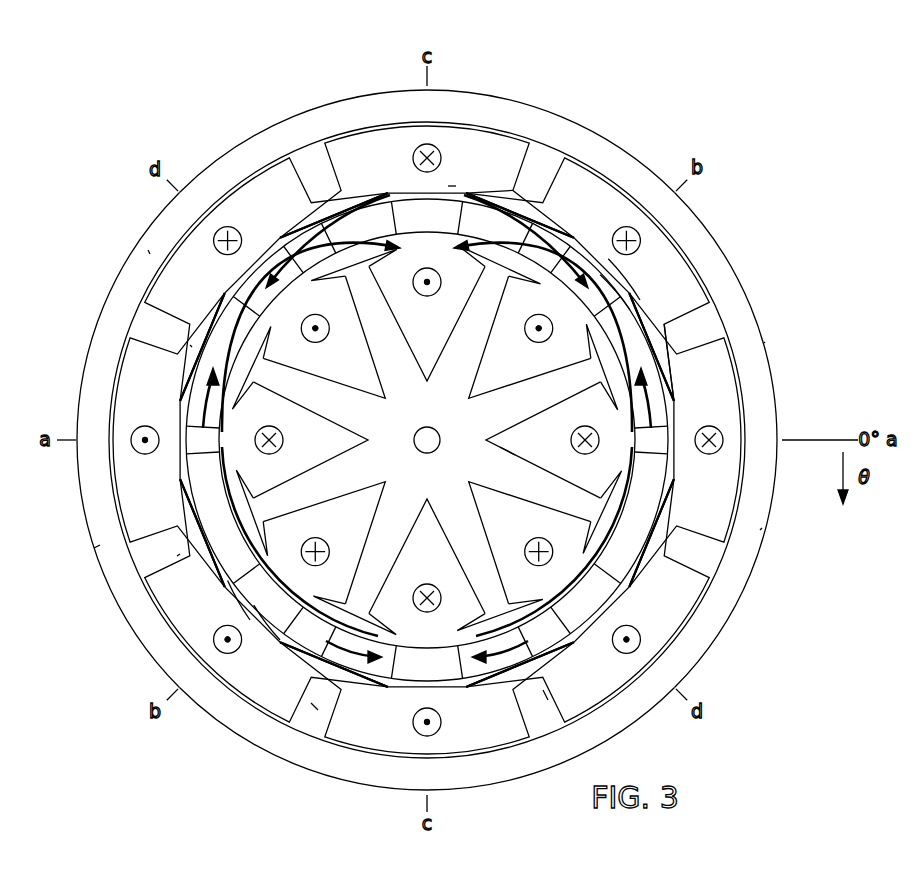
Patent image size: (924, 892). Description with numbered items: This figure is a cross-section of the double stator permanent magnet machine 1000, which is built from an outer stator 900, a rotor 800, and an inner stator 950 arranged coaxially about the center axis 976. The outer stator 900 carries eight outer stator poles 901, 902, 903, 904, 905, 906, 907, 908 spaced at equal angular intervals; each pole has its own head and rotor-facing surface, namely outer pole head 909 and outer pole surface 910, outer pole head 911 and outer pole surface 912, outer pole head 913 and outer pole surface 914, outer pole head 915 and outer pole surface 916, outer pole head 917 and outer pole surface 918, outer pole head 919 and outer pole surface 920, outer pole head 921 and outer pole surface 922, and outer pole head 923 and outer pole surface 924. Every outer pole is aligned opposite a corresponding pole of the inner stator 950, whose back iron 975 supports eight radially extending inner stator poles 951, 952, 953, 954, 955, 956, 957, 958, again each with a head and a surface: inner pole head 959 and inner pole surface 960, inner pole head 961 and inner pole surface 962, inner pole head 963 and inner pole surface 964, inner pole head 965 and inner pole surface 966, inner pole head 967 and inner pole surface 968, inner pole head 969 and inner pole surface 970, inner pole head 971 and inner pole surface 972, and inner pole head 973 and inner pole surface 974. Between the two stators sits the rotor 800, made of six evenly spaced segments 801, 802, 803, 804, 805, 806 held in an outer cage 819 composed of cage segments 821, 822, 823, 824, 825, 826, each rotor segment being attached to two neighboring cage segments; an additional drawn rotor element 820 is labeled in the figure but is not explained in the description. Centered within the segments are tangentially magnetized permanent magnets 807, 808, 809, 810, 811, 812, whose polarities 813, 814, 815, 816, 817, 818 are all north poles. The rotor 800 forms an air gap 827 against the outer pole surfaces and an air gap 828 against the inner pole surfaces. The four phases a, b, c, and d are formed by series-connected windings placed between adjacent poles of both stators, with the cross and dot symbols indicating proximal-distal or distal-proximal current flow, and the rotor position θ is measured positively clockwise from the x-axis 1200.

The outer stator 900 is at (500, 97).
The outer stator pole 901 is at (556, 135).
The outer stator pole 902 is at (705, 278).
The outer stator pole 903 is at (700, 630).
The outer stator pole 904 is at (602, 735).
The outer stator pole 905 is at (270, 730).
The outer stator pole 906 is at (152, 625).
The outer stator pole 907 is at (170, 290).
The outer stator pole 908 is at (283, 148).
The outer pole head 909 is at (552, 210).
The outer pole surface 910 is at (476, 196).
The outer pole head 911 is at (764, 342).
The outer pole surface 912 is at (690, 335).
The outer pole head 913 is at (760, 530).
The outer pole surface 914 is at (688, 565).
The outer pole head 915 is at (470, 692).
The outer pole surface 916 is at (548, 705).
The outer pole head 917 is at (275, 685).
The outer pole surface 918 is at (315, 712).
The outer pole head 919 is at (100, 545).
The outer pole surface 920 is at (178, 556).
The outer pole head 921 is at (148, 252).
The outer pole surface 922 is at (190, 345).
The outer pole head 923 is at (338, 186).
The outer pole surface 924 is at (300, 212).
The rotor 800 is at (400, 186).
The segment 801 is at (603, 186).
The segment 802 is at (592, 362).
The segment 803 is at (630, 636).
The segment 804 is at (230, 630).
The segment 805 is at (348, 475).
The segment 806 is at (262, 298).
The permanent magnet 807 is at (486, 290).
The permanent magnet 808 is at (672, 478).
The permanent magnet 809 is at (560, 655).
The permanent magnet 810 is at (270, 645).
The permanent magnet 811 is at (188, 470).
The permanent magnet 812 is at (322, 237).
The polarity 813 is at (618, 258).
The polarity 814 is at (675, 398).
The polarity 815 is at (426, 662).
The polarity 816 is at (380, 690).
The polarity 817 is at (190, 402).
The polarity 818 is at (252, 255).
The outer cage 819 is at (510, 250).
The ring segment 820 is at (445, 233).
The cage segment 821 is at (622, 288).
The cage segment 822 is at (640, 598).
The cage segment 823 is at (410, 708).
The cage segment 824 is at (215, 605).
The cage segment 825 is at (195, 366).
The cage segment 826 is at (427, 438).
The air gap 827 is at (452, 186).
The air gap 828 is at (398, 256).
The inner stator 950 is at (482, 386).
The inner stator pole 951 is at (412, 350).
The inner stator pole 952 is at (508, 447).
The inner stator pole 953 is at (505, 450).
The inner stator pole 954 is at (538, 548).
The inner stator pole 955 is at (403, 545).
The inner stator pole 956 is at (440, 505).
The inner stator pole 957 is at (348, 420).
The inner stator pole 958 is at (372, 352).
The inner pole head 959 is at (466, 252).
The inner pole surface 960 is at (538, 215).
The inner pole head 961 is at (498, 330).
The inner pole surface 962 is at (540, 386).
The inner pole head 963 is at (600, 433).
The inner pole surface 964 is at (596, 492).
The inner pole head 965 is at (528, 584).
The inner pole surface 966 is at (535, 600).
The inner pole head 967 is at (392, 612).
The inner pole surface 968 is at (305, 606).
The inner pole head 969 is at (340, 560).
The inner pole surface 970 is at (322, 546).
The inner pole head 971 is at (238, 400).
The inner pole surface 972 is at (270, 362).
The inner pole head 973 is at (350, 290).
The inner pole surface 974 is at (281, 239).
The back iron 975 is at (384, 400).
The center axis 976 is at (435, 432).
The double stator permanent magnet machine 1000 is at (822, 132).
The x-axis 1200 is at (808, 438).